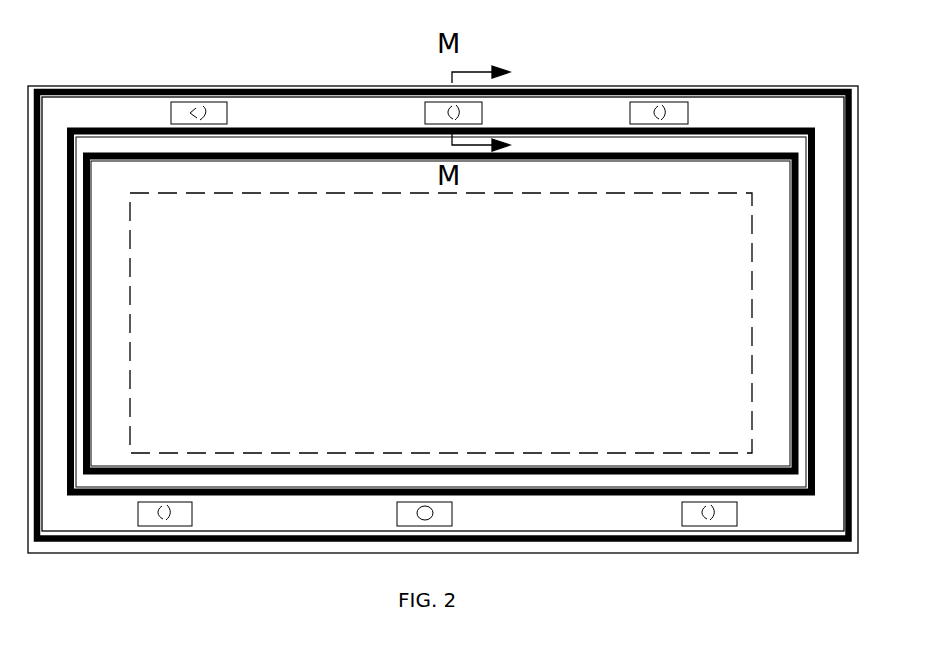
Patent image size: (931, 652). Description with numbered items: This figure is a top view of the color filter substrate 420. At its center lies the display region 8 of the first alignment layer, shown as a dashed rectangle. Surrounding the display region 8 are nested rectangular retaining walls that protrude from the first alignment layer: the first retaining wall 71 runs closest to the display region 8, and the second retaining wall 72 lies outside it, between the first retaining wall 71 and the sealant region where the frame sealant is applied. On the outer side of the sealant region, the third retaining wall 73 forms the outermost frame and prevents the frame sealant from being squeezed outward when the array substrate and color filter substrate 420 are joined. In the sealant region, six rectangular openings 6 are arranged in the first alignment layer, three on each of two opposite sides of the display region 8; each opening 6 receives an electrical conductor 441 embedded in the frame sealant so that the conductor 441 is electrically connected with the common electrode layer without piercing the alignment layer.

The color filter substrate 420 is at (139, 87).
The opening 6 is at (190, 114).
The electrical conductor 441 is at (230, 88).
The third retaining wall 73 is at (292, 88).
The second retaining wall 72 is at (515, 127).
The first retaining wall 71 is at (593, 150).
The display region 8 is at (737, 193).